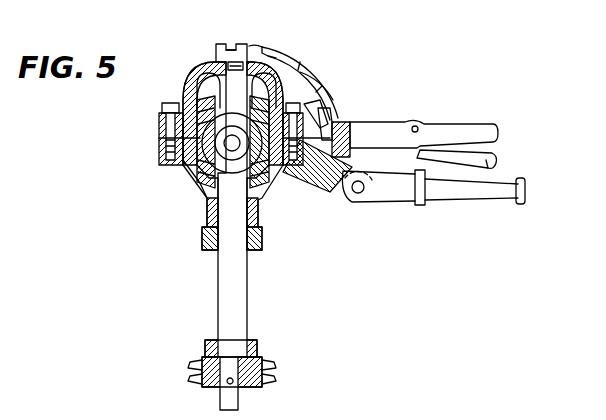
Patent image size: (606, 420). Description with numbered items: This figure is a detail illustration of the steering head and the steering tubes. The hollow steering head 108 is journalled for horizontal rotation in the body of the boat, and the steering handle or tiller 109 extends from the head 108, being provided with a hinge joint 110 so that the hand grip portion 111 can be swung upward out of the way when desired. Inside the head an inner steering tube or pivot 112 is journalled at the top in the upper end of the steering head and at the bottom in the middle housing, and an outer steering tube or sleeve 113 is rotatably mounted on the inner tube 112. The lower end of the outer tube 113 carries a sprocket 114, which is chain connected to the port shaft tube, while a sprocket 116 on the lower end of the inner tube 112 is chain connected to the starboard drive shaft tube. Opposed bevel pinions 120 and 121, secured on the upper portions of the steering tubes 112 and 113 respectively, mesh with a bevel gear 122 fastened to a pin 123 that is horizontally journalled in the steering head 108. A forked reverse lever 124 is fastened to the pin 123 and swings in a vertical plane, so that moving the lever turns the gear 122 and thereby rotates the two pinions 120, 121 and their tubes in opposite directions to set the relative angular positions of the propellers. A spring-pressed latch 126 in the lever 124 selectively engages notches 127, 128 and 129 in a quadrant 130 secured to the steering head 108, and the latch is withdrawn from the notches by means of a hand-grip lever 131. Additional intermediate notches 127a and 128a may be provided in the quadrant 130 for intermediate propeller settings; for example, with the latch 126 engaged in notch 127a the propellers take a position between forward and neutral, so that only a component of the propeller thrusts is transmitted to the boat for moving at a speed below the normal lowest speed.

The steering head 108 is at (210, 62).
The steering handle or tiller 109 is at (398, 178).
The hinge joint 110 is at (357, 194).
The hand grip portion 111 is at (476, 193).
The inner steering tube or pivot 112 is at (240, 404).
The outer steering tube or sleeve 113 is at (237, 298).
The sprocket 114 is at (258, 358).
The sprocket 116 is at (270, 378).
The bevel pinion 120 is at (205, 80).
The bevel pinion 121 is at (288, 190).
The bevel gear 122 is at (203, 180).
The pin 123 is at (170, 163).
The forked reverse lever 124 is at (404, 122).
The spring-pressed latch 126 is at (352, 122).
The notch 127 is at (330, 105).
The notch 127a is at (366, 96).
The notch 128 is at (338, 68).
The notch 128a is at (270, 55).
The notch 129 is at (248, 44).
The quadrant 130 is at (342, 84).
The hand-grip lever 131 is at (490, 160).